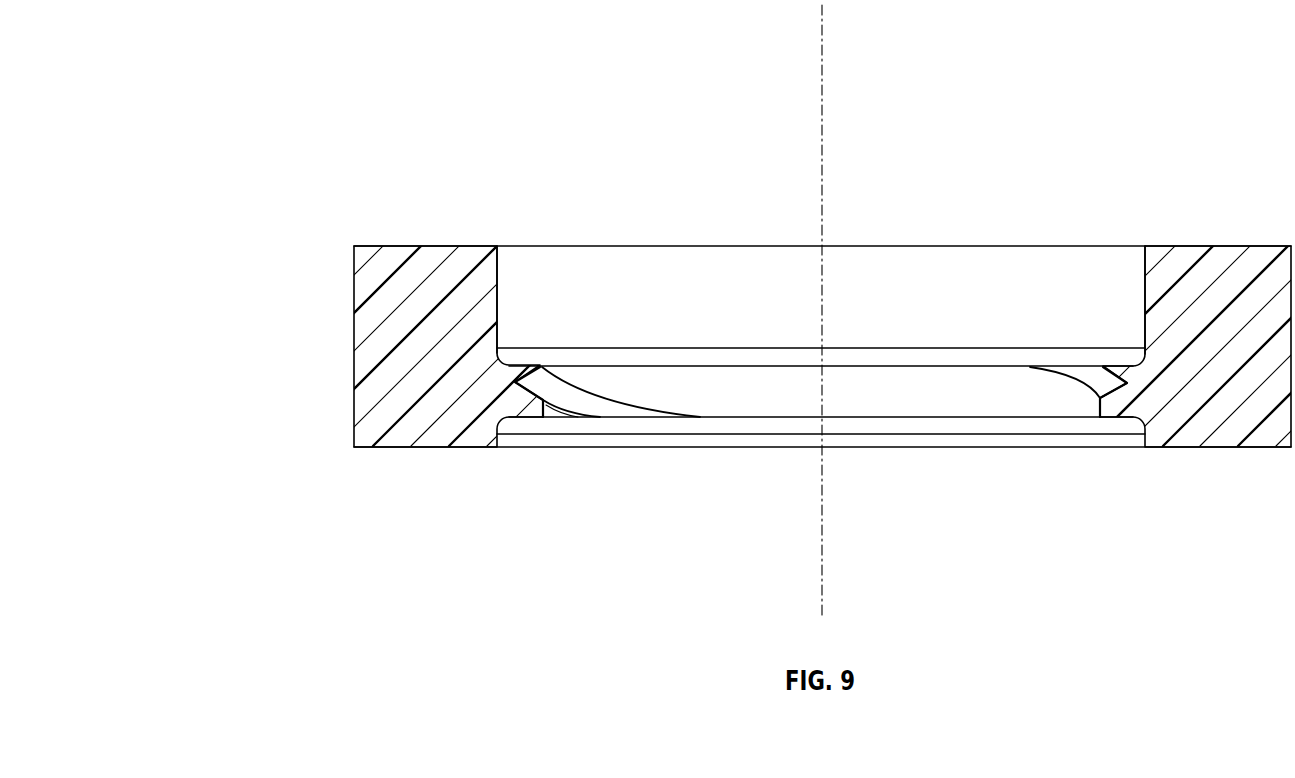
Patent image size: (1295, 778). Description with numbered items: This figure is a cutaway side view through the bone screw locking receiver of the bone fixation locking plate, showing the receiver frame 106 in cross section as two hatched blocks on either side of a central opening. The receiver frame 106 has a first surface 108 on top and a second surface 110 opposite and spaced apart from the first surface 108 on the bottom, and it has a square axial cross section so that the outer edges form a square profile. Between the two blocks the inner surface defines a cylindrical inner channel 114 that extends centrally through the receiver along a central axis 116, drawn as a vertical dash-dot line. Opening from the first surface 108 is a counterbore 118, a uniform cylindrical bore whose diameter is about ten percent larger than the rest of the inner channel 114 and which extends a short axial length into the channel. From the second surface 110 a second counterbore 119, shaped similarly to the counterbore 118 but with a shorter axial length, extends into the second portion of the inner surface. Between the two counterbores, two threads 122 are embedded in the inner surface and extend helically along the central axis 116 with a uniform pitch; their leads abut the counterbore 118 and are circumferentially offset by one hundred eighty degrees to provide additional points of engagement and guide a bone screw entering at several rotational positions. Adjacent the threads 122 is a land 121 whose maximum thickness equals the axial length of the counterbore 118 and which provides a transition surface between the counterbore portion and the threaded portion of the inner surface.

The receiver frame 106 is at (412, 365).
The first surface 108 is at (387, 245).
The second surface 110 is at (388, 447).
The inner channel 114 is at (578, 270).
The central axis 116 is at (818, 87).
The counterbore 118 is at (545, 296).
The second counterbore 119 is at (972, 438).
The land 121 is at (1107, 408).
The threads 122 is at (595, 405).